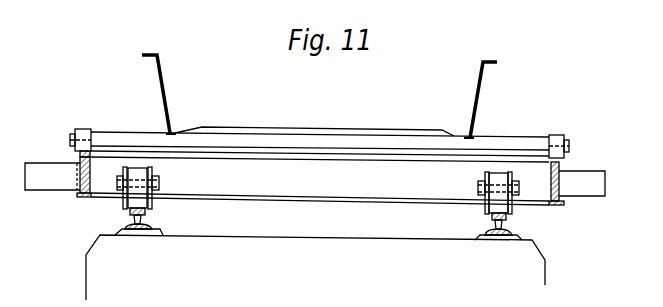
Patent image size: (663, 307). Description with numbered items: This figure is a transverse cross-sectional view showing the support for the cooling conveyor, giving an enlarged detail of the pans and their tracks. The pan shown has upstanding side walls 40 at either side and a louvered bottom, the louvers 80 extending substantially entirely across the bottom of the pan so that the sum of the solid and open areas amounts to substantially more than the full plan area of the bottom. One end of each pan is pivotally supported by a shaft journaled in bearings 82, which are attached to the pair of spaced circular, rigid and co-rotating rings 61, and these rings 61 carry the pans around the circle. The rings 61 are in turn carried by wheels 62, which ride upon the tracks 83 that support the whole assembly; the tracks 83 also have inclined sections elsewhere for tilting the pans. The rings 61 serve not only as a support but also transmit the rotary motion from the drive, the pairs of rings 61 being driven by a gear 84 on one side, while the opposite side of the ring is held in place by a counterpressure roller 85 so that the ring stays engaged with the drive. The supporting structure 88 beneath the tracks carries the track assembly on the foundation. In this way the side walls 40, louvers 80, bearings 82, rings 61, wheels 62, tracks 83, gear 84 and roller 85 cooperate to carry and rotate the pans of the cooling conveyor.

The side walls 40 is at (165, 101).
The circular rings 61 is at (78, 198).
The wheels 62 is at (490, 203).
The louvers 80 is at (378, 130).
The bearings 82 is at (84, 129).
The tracks 83 is at (145, 221).
The gear 84 is at (46, 171).
The counterpressure roller 85 is at (598, 177).
The base 88 is at (372, 200).